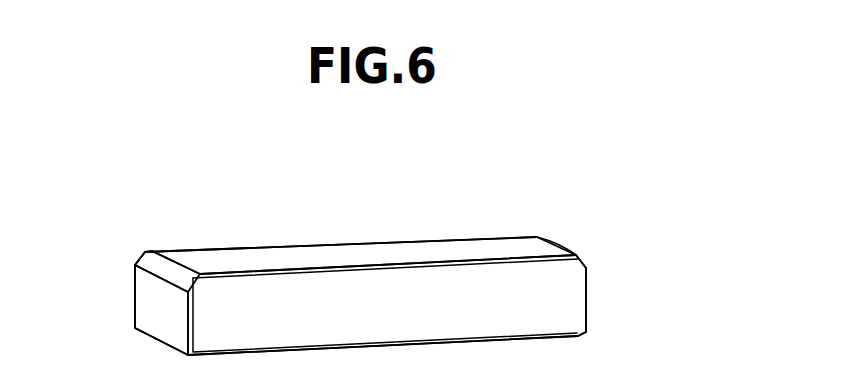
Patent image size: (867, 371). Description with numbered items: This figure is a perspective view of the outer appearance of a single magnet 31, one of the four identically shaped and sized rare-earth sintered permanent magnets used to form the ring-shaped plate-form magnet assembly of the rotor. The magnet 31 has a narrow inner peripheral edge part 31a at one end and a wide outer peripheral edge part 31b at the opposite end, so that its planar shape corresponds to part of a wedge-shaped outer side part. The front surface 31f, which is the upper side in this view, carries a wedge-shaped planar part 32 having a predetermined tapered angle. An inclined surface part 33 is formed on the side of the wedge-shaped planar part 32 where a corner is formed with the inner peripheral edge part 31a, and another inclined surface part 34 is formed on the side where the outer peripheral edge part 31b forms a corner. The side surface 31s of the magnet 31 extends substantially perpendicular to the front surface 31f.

The magnet 31 is at (281, 238).
The front surface 31f is at (327, 256).
The wedge-shaped planar part 32 is at (393, 246).
The inclined surface part 33 is at (168, 272).
The inclined surface part 34 is at (557, 244).
The inner peripheral edge part 31a is at (150, 303).
The outer peripheral edge part 31b is at (587, 302).
The side surface 31s is at (350, 323).